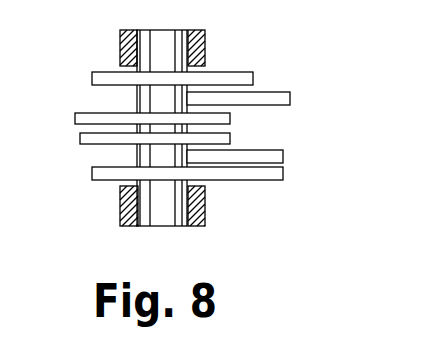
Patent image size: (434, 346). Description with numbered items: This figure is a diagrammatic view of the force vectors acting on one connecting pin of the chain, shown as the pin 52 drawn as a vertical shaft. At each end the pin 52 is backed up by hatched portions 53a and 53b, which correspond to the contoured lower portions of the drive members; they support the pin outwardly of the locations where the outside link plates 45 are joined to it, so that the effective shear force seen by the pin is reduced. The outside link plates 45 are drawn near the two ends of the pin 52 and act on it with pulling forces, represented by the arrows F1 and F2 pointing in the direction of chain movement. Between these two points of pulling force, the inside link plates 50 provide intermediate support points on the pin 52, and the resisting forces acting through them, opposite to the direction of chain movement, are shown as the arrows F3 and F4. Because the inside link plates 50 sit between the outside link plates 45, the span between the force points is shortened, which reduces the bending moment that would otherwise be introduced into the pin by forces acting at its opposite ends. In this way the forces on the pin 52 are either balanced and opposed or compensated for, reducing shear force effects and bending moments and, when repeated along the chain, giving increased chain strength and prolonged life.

The outside link plates 45 is at (272, 152).
The inside link plates 50 is at (231, 120).
The pin 52 is at (172, 223).
The contoured lower portion of drive member 53a is at (122, 32).
The contoured lower portion of drive member 53b is at (200, 45).
The force F1 is at (192, 78).
The force F2 is at (223, 174).
The force F3 is at (132, 118).
The force F4 is at (135, 138).